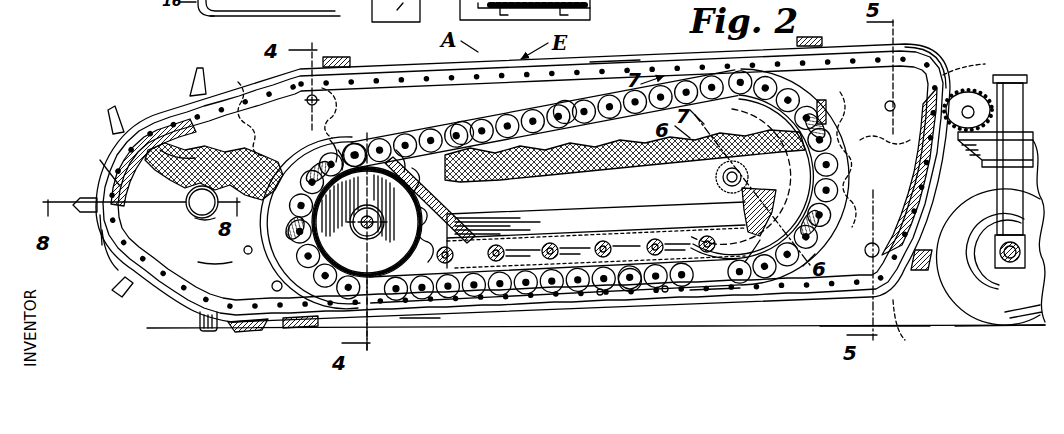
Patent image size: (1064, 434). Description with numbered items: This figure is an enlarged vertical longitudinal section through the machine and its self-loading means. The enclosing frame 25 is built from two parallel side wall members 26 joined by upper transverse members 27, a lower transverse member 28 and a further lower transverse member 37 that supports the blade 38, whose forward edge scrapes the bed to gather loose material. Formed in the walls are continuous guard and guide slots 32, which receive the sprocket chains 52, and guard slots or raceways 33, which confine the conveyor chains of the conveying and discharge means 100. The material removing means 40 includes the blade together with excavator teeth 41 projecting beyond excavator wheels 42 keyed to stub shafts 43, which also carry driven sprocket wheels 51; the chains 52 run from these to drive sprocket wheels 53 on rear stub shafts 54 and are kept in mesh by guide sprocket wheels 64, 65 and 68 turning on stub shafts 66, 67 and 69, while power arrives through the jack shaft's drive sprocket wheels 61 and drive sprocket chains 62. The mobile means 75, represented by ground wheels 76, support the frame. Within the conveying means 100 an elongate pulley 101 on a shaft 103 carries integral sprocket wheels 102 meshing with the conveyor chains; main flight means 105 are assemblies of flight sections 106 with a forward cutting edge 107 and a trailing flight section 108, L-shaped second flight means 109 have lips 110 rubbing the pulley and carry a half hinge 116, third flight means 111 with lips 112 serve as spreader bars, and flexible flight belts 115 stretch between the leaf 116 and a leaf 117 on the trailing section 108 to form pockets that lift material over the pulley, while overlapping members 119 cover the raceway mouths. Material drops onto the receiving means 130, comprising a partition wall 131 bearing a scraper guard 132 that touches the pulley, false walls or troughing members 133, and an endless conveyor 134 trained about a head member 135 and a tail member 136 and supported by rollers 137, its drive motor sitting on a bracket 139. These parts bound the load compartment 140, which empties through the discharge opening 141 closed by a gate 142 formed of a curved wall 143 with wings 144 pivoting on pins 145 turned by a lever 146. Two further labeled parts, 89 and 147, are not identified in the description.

The enclosing structure or frame 25 is at (942, 58).
The longitudinal structural side wall members 26 is at (514, 102).
The upper transverse structural members 27 is at (340, 56).
The lower transverse structural member 28 is at (918, 280).
The guard and guide slots 32 is at (388, 70).
The guard slots or raceways 33 is at (463, 126).
The lower transverse structural member 37 is at (258, 330).
The blade 38 is at (220, 332).
The material removing means 40 is at (105, 260).
The excavator teeth 41 is at (108, 116).
The excavator wheels 42 is at (100, 240).
The stub shafts 43 is at (198, 217).
The driven sprocket wheels 51 is at (262, 90).
The sprocket chains 52 is at (596, 62).
The drive sprocket wheels 53 is at (969, 62).
The stub shafts 54 is at (889, 77).
The drive sprocket wheels 61 is at (972, 95).
The drive sprocket chains 62 is at (985, 95).
The guide sprocket wheel 64 is at (320, 99).
The guide sprocket wheel 65 is at (911, 329).
The stub shaft 66 is at (320, 104).
The stub shaft 67 is at (932, 326).
The guide sprocket wheel 68 is at (248, 240).
The stub shaft 69 is at (246, 327).
The mobile means 75 is at (210, 20).
The ground wheels 76 is at (466, 322).
The post 89 is at (1010, 78).
The removed material conveying and discharge means 100 is at (306, 172).
The elongate pulley 101 is at (367, 241).
The sprocket wheels 102 is at (410, 168).
The shaft 103 is at (370, 216).
The main flight means 105 is at (152, 127).
The flight sections 106 is at (168, 152).
The forward cutting edge 107 is at (178, 114).
The trailing flight section 108 is at (116, 184).
The second flight means 109 is at (830, 128).
The leading edge lip 110 is at (350, 222).
The third flight means 111 is at (334, 142).
The leading edge lip 112 is at (340, 152).
The flexible flight belts 115 is at (206, 262).
The half hinge or leaf 116 is at (277, 280).
The half-hinge or leaf 117 is at (196, 214).
The overlapping members 119 is at (562, 104).
The discharged removed material receiving means 130 is at (628, 220).
The partition wall member 131 is at (436, 190).
The scraper guard 132 is at (518, 12).
The false walls or troughing members 133 is at (655, 207).
The endless conveyor 134 is at (690, 238).
The head member 135 is at (708, 300).
The tail member 136 is at (412, 320).
The rollers or pulleys 137 is at (600, 300).
The bracket 139 is at (592, 14).
The load compartment 140 is at (456, 208).
The discharge opening 141 is at (748, 268).
The gate 142 is at (697, 156).
The curved wall 143 is at (800, 195).
The wings 144 is at (784, 164).
The pins 145 is at (733, 165).
The lever 146 is at (1005, 266).
The bracket 147 is at (995, 149).